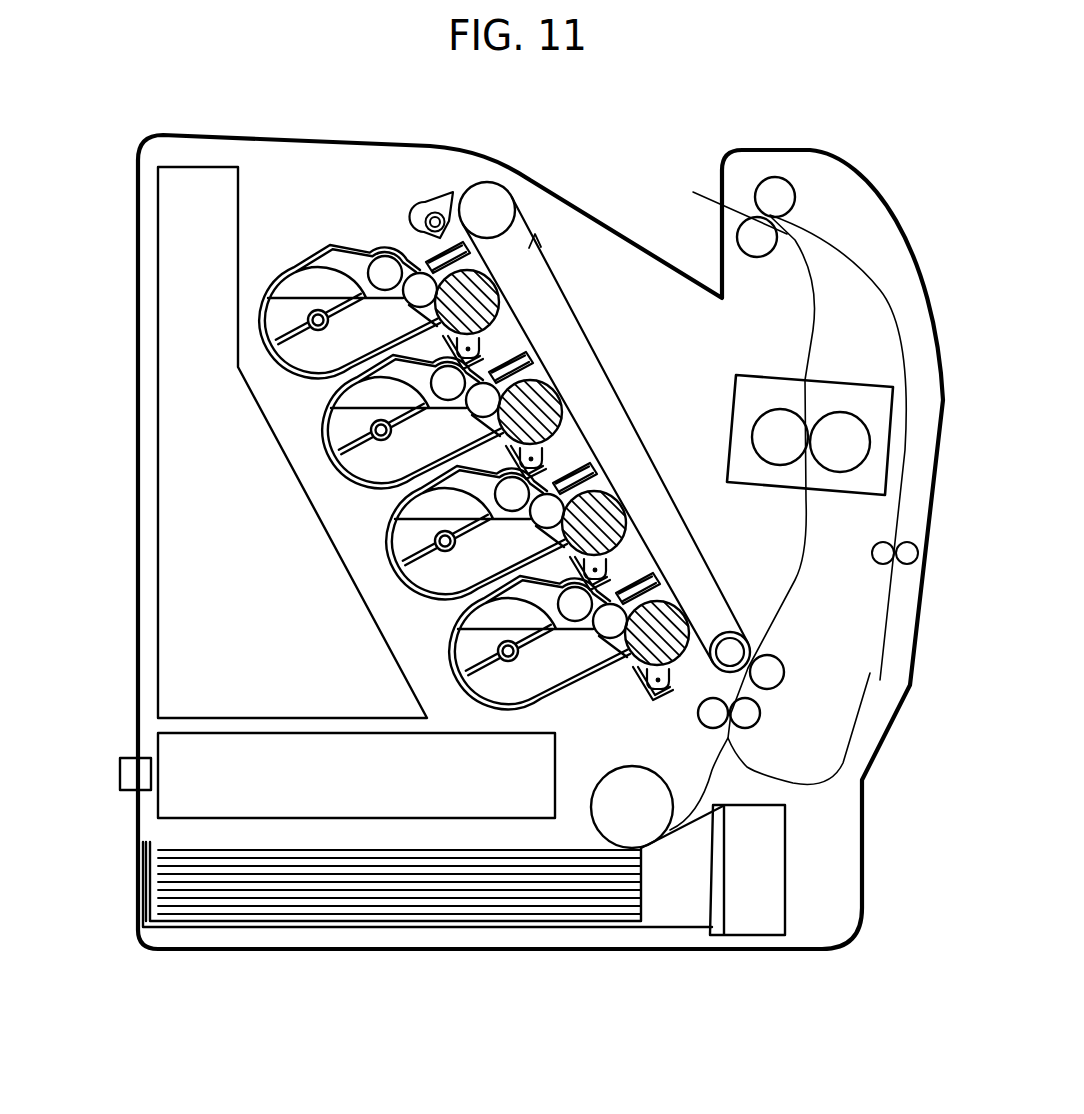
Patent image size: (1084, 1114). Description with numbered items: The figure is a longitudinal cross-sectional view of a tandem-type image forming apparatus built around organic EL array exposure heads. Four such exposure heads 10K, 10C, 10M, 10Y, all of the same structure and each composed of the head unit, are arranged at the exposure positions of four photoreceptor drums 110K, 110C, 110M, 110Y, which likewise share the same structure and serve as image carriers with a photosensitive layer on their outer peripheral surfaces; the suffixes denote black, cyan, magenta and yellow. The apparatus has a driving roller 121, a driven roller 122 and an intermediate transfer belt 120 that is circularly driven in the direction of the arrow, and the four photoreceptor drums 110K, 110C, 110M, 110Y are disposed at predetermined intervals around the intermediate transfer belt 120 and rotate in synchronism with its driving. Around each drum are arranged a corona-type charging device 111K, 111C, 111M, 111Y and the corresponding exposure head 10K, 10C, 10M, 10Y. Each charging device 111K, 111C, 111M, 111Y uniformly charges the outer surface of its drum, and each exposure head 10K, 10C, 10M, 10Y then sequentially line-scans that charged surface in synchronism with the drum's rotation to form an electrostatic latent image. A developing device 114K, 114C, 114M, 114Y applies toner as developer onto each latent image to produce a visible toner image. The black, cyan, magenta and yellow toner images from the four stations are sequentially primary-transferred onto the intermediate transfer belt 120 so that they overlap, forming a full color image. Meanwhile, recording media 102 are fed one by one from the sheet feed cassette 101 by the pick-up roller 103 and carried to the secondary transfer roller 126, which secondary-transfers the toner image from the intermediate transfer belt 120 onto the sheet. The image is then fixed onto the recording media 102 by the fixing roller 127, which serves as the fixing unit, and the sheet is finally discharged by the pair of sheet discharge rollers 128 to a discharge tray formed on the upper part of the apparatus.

The organic EL array exposure head 10Y is at (338, 390).
The organic EL array exposure head 10M is at (400, 500).
The organic EL array exposure head 10C is at (462, 608).
The organic EL array exposure head 10K is at (612, 676).
The photoreceptor drum 110Y is at (497, 284).
The photoreceptor drum 110M is at (556, 392).
The photoreceptor drum 110C is at (620, 500).
The photoreceptor drum 110K is at (680, 612).
The charging device 111Y is at (482, 345).
The charging device 111M is at (545, 455).
The charging device 111C is at (608, 565).
The charging device 111K is at (672, 688).
The developing device 114Y is at (413, 253).
The developing device 114M is at (500, 355).
The developing device 114C is at (575, 470).
The developing device 114K is at (641, 584).
The intermediate transfer belt 120 is at (536, 207).
The driving roller 121 is at (730, 632).
The driven roller 122 is at (493, 184).
The secondary transfer roller 126 is at (783, 670).
The fixing roller 127 is at (773, 377).
The pair of sheet discharge rollers 128 is at (777, 238).
The sheet feed cassette 101 is at (147, 873).
The recording media 102 is at (185, 849).
The pick-up roller 103 is at (648, 778).